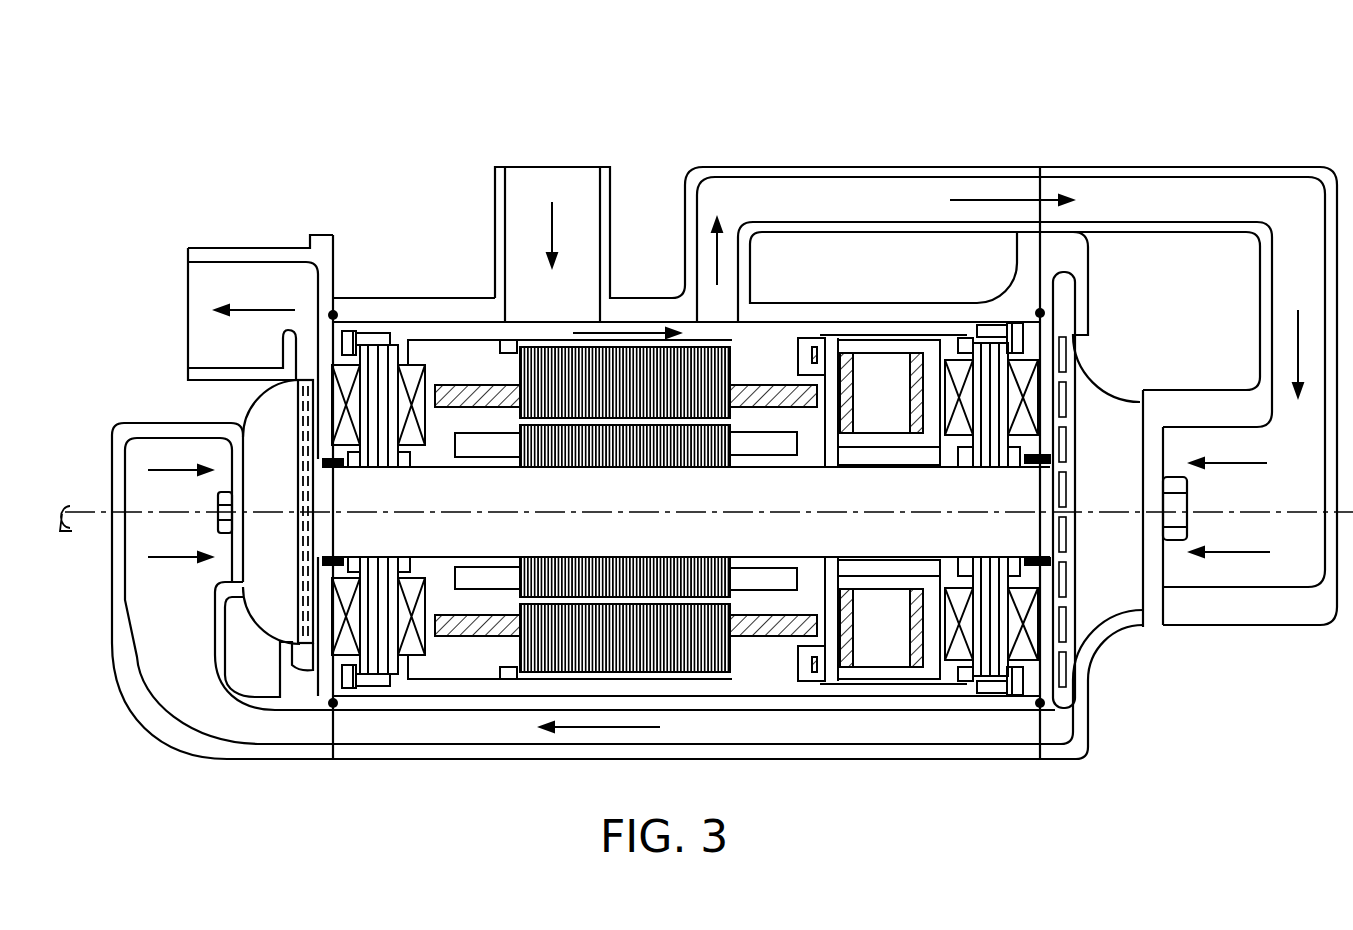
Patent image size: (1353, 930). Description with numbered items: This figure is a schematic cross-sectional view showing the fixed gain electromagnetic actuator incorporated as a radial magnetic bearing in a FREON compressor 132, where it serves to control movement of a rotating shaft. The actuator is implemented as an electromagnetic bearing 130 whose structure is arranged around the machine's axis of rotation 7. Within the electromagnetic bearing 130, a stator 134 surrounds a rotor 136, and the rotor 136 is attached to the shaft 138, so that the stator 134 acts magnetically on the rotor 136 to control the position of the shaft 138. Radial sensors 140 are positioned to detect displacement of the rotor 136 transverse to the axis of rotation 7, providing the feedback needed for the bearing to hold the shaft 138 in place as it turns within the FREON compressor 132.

The FREON compressor 132 is at (662, 56).
The axis of rotation 7 is at (97, 512).
The electromagnetic bearing 130 is at (402, 328).
The stator 134 is at (425, 375).
The rotor 136 is at (378, 467).
The shaft 138 is at (647, 506).
The radial sensors 140 is at (333, 468).